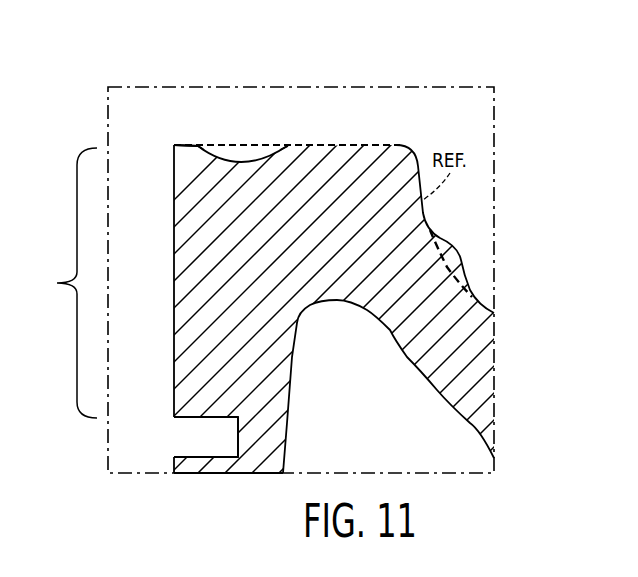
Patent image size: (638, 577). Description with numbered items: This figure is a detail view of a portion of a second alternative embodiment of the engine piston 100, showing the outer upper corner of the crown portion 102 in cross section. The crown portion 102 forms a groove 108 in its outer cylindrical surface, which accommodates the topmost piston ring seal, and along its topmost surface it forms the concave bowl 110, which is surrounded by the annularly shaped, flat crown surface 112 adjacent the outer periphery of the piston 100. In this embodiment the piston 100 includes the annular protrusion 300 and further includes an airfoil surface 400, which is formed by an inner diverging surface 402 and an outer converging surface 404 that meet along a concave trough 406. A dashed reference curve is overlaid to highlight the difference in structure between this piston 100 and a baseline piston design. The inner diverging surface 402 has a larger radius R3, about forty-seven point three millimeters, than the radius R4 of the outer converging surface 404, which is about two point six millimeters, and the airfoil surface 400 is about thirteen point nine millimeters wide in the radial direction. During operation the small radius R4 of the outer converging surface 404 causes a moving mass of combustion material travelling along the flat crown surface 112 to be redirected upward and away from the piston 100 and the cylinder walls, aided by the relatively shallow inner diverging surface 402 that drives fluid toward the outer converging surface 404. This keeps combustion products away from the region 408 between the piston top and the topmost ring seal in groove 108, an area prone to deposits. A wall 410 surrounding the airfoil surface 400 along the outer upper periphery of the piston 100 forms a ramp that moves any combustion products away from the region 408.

The piston 100 is at (480, 73).
The crown portion 102 is at (188, 327).
The groove 108 is at (198, 434).
The bowl 110 is at (468, 225).
The flat crown surface 112 is at (397, 145).
The annular protrusion 300 is at (466, 252).
The airfoil surface 400 is at (232, 143).
The inner diverging surface 402 is at (262, 166).
The outer converging surface 404 is at (197, 148).
The concave trough 406 is at (220, 163).
The region 408 is at (57, 283).
The wall 410 is at (177, 143).
The radius of inner diverging surface R3 is at (285, 145).
The radius of outer converging surface R4 is at (207, 145).